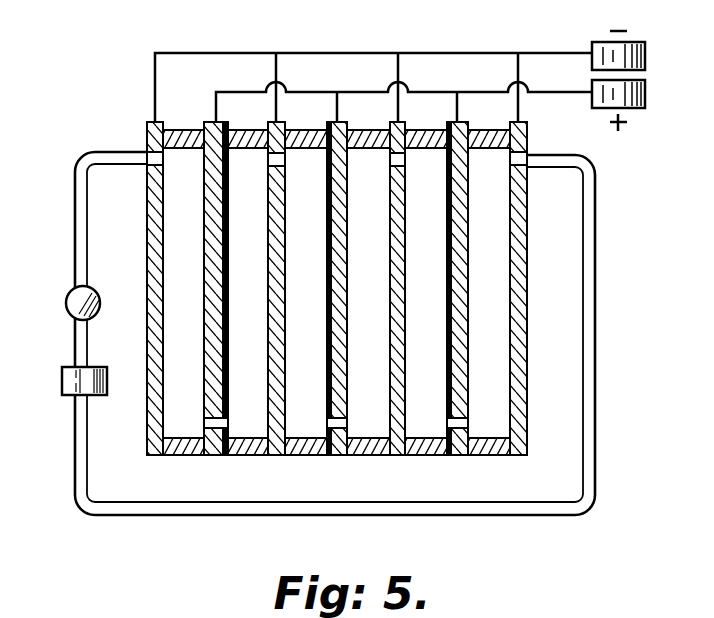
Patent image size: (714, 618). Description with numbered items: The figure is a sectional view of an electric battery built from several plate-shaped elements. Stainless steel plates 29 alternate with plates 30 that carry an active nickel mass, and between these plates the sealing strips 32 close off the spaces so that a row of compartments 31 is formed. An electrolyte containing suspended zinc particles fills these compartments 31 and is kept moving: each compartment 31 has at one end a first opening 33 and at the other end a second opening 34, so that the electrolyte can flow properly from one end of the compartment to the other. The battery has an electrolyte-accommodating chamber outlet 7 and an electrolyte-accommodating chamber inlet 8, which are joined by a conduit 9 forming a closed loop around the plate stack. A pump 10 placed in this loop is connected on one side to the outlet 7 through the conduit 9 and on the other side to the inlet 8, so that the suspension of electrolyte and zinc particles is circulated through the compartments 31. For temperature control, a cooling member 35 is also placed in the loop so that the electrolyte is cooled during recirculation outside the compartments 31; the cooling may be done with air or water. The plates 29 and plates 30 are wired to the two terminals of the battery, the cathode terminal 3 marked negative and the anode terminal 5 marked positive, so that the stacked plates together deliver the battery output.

The cathode terminal 3 is at (643, 52).
The anode terminal 5 is at (630, 108).
The electrolyte-accommodating chamber outlet 7 is at (148, 157).
The electrolyte-accommodating chamber inlet 8 is at (528, 160).
The conduit 9 is at (80, 205).
The pump 10 is at (75, 293).
The plates 29 is at (152, 220).
The plates 30 is at (204, 340).
The compartments 31 is at (248, 421).
The sealing strips 32 is at (183, 456).
The first opening 33 is at (228, 400).
The second opening 34 is at (285, 160).
The cooling member 35 is at (66, 398).